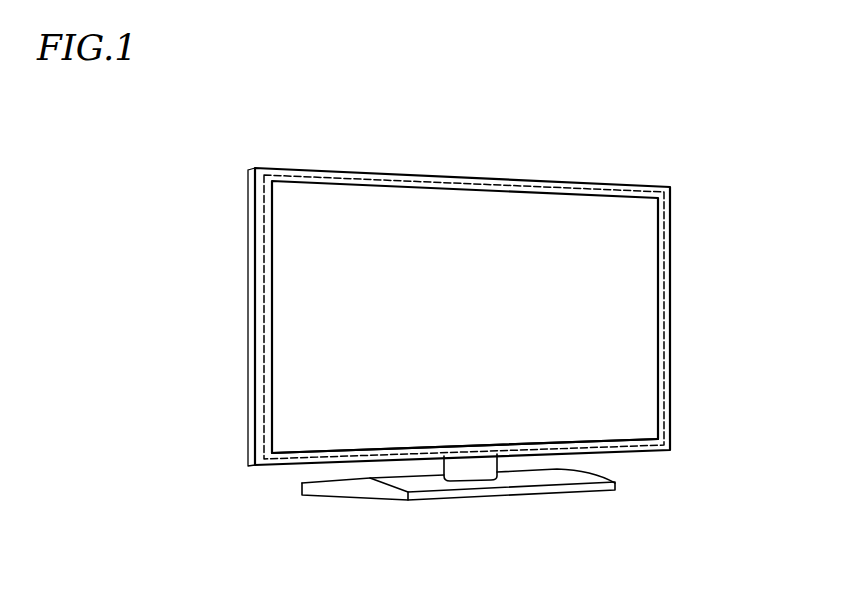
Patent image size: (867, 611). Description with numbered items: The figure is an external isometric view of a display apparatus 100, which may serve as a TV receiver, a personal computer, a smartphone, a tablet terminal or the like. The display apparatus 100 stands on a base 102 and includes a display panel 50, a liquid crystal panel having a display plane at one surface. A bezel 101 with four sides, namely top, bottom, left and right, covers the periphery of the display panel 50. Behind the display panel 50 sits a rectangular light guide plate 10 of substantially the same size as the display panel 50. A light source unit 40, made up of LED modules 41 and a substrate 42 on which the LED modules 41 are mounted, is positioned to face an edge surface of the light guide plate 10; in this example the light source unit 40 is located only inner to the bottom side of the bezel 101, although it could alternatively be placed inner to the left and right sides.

The display apparatus 100 is at (780, 119).
The bezel 101 is at (672, 247).
The base 102 is at (570, 479).
The light guide plate 10 is at (665, 363).
The display panel 50 is at (625, 298).
The light source unit 40 is at (541, 334).
The LED modules 41 is at (465, 317).
The substrate 42 is at (627, 450).